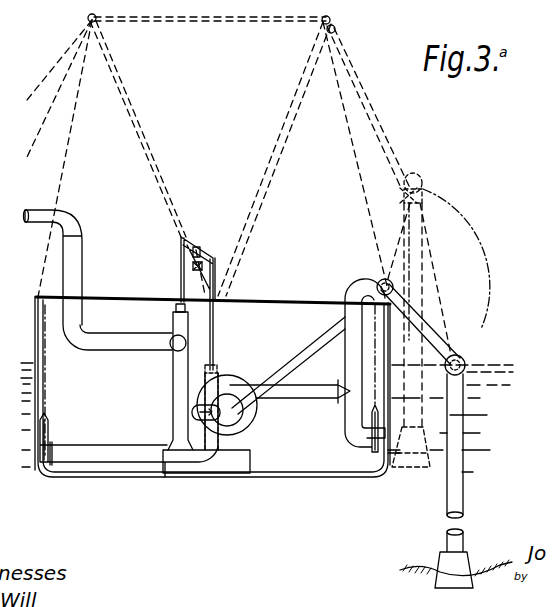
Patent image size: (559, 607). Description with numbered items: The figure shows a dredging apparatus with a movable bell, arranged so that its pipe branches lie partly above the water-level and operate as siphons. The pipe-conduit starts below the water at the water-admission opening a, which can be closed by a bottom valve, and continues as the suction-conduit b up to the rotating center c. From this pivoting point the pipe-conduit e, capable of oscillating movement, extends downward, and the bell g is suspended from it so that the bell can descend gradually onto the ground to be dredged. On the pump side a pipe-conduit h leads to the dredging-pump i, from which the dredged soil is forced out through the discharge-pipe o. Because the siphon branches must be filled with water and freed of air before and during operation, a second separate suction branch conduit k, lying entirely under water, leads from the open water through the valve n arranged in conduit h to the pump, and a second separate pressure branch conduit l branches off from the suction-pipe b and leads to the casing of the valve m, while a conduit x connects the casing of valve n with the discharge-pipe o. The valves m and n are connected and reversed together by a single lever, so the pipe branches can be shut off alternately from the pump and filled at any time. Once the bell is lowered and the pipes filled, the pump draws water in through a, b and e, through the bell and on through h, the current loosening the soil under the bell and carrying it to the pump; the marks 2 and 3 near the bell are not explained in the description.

The discharge-pipe o is at (40, 213).
The valve m is at (171, 322).
The conduit x is at (186, 343).
The dredging-pump i is at (243, 433).
The valve n is at (206, 450).
The suction branch conduit k is at (93, 452).
The pressure branch conduit l is at (304, 399).
The pipe-conduit h is at (306, 360).
The suction-conduit b is at (350, 360).
The rotating center c is at (394, 287).
The pipe-conduit e is at (475, 484).
The water-admission opening a is at (411, 447).
The bell g is at (462, 563).
The point 2 is at (432, 592).
The point 3 is at (471, 592).